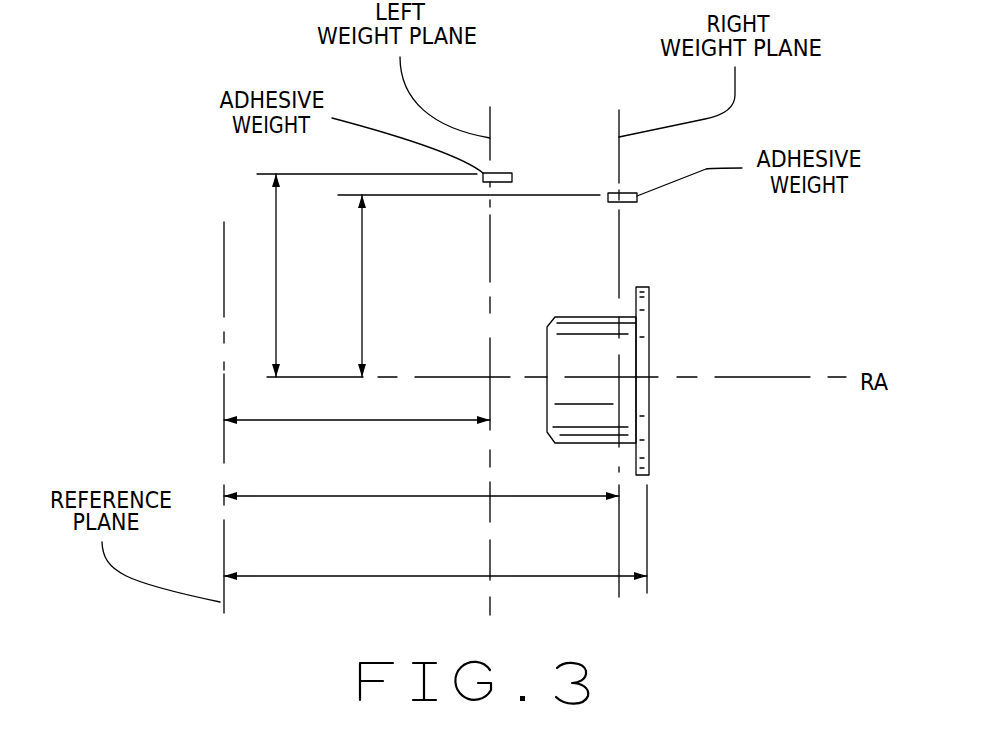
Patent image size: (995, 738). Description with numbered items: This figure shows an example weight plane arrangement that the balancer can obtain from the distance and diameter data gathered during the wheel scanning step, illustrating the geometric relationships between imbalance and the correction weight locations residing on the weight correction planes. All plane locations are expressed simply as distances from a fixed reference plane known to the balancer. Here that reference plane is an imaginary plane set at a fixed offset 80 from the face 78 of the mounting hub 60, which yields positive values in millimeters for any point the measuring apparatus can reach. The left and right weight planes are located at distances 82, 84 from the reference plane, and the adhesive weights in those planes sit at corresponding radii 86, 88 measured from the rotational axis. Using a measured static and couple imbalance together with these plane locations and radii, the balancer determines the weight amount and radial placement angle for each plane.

The mounting hub 60 is at (588, 447).
The face of the mounting hub 78 is at (652, 315).
The fixed offset 80 is at (340, 574).
The weight plane location 82 is at (335, 418).
The weight plane location 84 is at (345, 494).
The radius 86 is at (278, 292).
The radius 88 is at (360, 290).